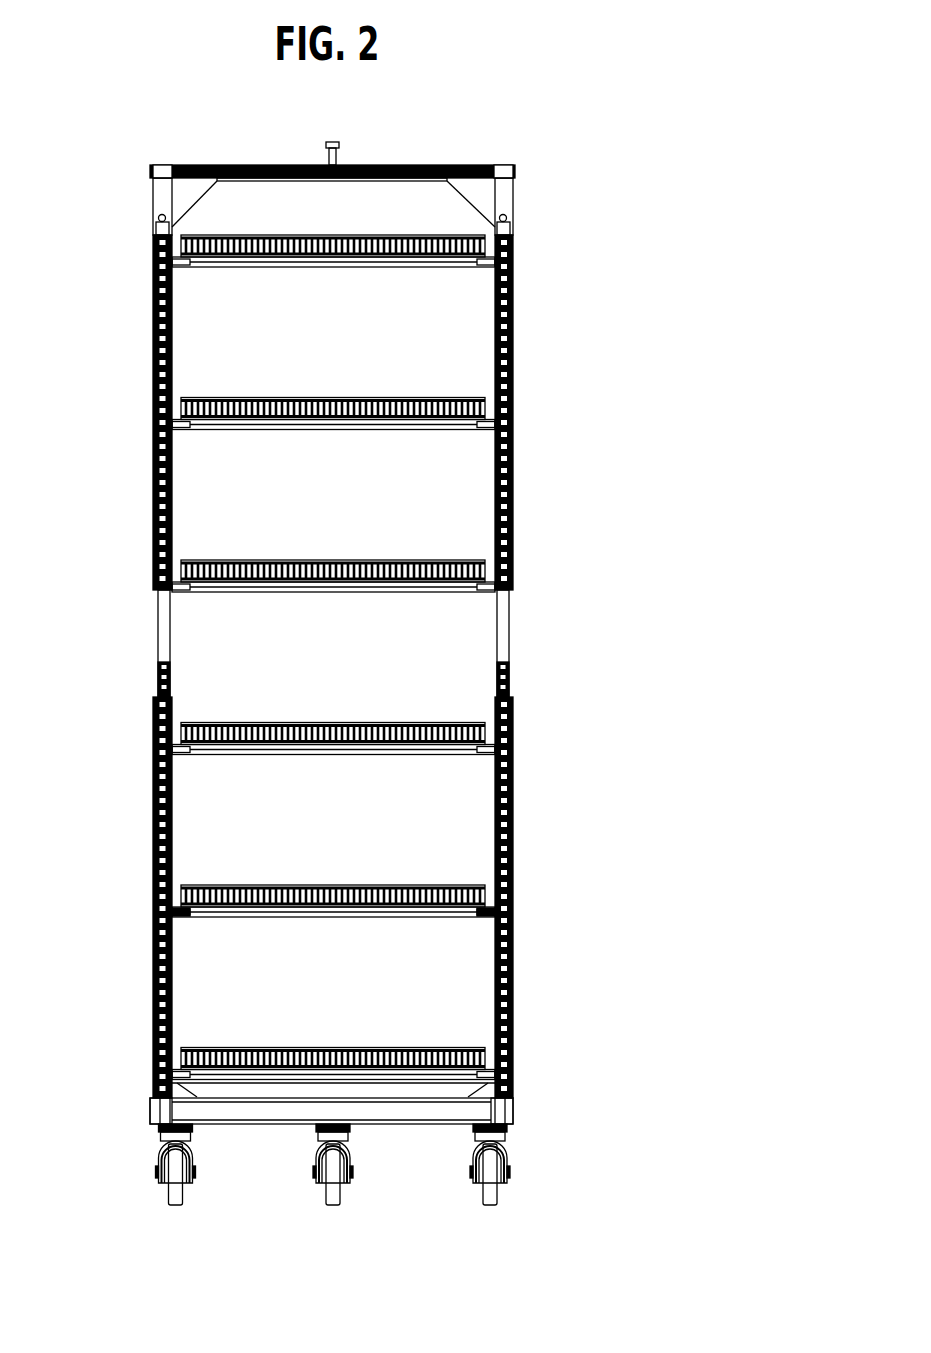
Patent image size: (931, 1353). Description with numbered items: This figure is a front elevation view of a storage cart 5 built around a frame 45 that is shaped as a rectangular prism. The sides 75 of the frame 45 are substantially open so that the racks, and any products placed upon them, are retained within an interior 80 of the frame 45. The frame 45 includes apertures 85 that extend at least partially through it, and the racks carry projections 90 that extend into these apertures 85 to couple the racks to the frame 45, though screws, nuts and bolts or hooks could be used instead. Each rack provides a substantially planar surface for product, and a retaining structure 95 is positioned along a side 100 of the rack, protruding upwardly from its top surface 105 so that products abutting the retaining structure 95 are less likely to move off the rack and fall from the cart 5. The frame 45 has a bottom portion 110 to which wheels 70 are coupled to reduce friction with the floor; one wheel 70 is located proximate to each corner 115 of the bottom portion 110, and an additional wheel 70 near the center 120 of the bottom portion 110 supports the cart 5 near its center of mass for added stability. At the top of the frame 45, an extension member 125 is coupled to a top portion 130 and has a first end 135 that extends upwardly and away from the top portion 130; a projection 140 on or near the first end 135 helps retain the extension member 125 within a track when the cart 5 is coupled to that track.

The cart 5 is at (560, 310).
The frame 45 is at (517, 480).
The wheels 70 is at (175, 1207).
The sides 75 is at (163, 640).
The interior 80 is at (320, 667).
The apertures 85 is at (511, 673).
The projections 90 is at (157, 773).
The retaining structure 95 is at (455, 887).
The side 100 is at (513, 893).
The top surface 105 is at (214, 888).
The bottom portion 110 is at (520, 1105).
The corner 115 is at (149, 1127).
The center 120 is at (305, 1133).
The extension member 125 is at (313, 150).
The top portion 130 is at (527, 165).
The first end 135 is at (335, 142).
The projection 140 is at (340, 148).